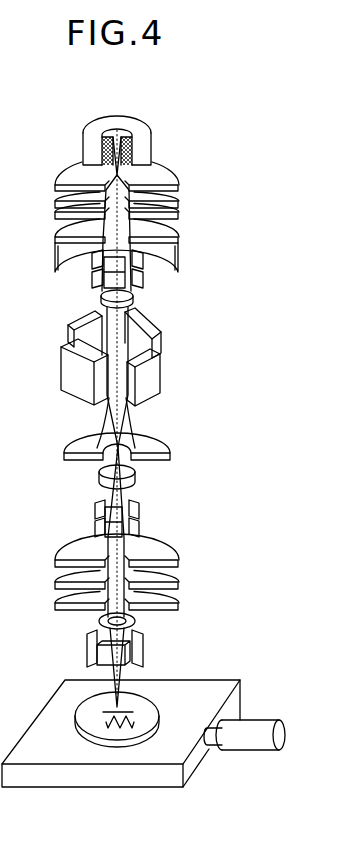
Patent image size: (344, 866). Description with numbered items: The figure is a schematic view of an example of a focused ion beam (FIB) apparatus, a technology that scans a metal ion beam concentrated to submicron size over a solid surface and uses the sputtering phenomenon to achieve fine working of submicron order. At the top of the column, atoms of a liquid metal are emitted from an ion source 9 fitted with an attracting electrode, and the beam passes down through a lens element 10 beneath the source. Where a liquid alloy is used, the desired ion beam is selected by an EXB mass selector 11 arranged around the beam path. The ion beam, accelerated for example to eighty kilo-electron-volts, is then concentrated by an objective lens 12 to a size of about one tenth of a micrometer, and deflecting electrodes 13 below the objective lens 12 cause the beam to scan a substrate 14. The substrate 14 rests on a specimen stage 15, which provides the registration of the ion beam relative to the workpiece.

The ion source 9 is at (147, 155).
The first electron lens 10 is at (177, 212).
The EXB mass selector 11 is at (152, 380).
The objective lens 12 is at (173, 577).
The deflecting electrodes 13 is at (144, 646).
The substrate 14 is at (113, 735).
The specimen stage 15 is at (197, 760).